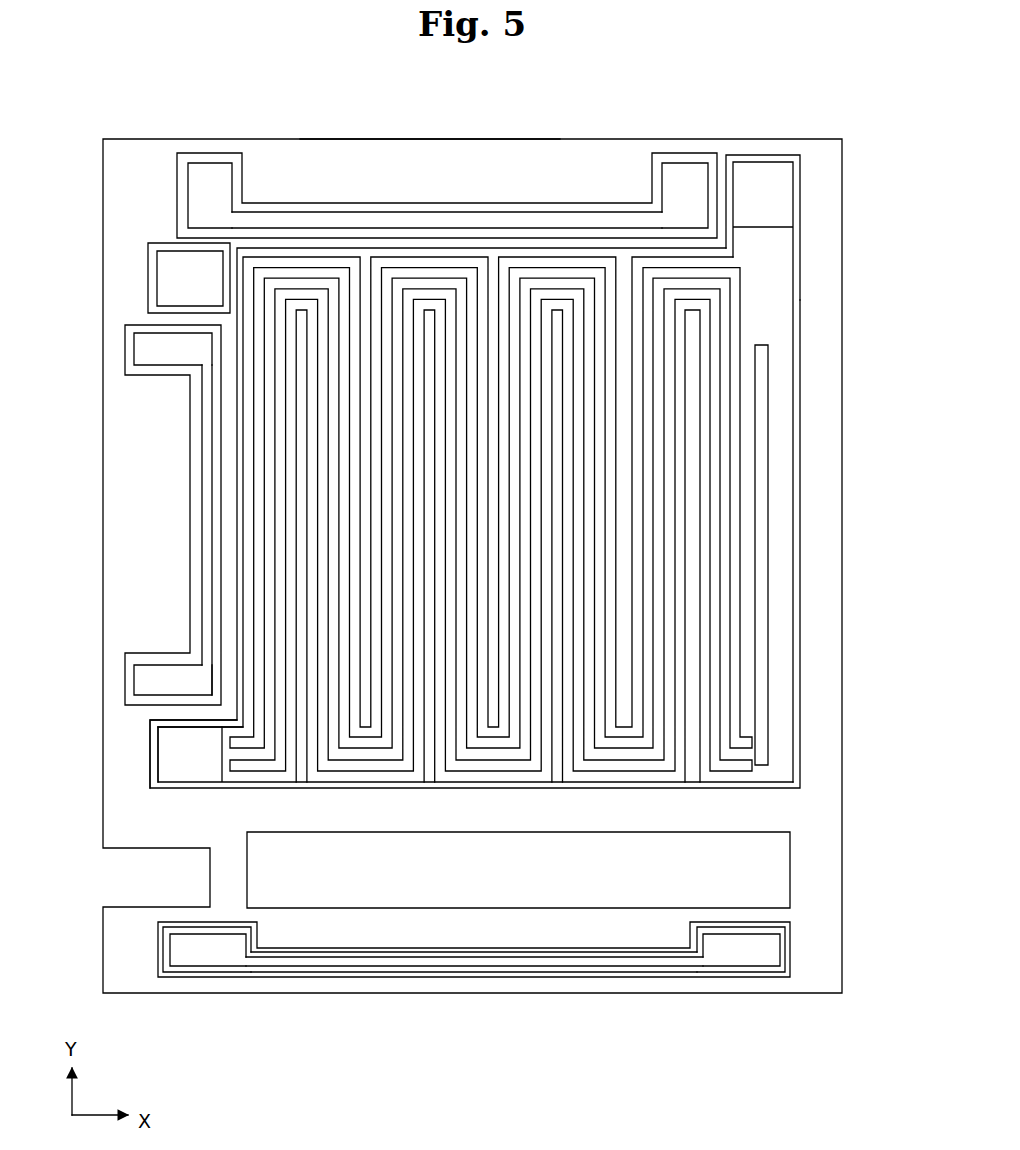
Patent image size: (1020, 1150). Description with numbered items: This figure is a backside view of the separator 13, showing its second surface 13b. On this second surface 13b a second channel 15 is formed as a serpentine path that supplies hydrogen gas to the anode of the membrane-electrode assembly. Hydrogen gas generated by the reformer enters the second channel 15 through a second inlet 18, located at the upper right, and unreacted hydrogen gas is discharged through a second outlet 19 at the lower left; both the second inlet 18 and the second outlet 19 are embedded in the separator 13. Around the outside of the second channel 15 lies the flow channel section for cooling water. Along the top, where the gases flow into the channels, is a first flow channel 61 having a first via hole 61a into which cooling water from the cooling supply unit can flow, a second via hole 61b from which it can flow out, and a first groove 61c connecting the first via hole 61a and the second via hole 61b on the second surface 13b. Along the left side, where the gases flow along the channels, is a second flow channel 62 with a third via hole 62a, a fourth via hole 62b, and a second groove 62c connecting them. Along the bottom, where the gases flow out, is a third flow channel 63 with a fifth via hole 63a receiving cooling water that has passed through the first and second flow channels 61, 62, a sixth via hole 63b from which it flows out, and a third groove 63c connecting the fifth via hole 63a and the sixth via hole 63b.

The separator 13 is at (825, 113).
The second surface 13b is at (428, 146).
The second channel 15 is at (728, 572).
The second inlet 18 is at (766, 178).
The second outlet 19 is at (163, 748).
The first flow channel 61 is at (377, 182).
The first via hole 61a is at (684, 180).
The second via hole 61b is at (213, 180).
The first groove 61c is at (515, 214).
The second flow channel 62 is at (180, 464).
The third via hole 62a is at (140, 350).
The fourth via hole 62b is at (142, 682).
The second groove 62c is at (205, 413).
The third flow channel 63 is at (547, 993).
The fifth via hole 63a is at (735, 962).
The sixth via hole 63b is at (215, 962).
The third groove 63c is at (400, 962).